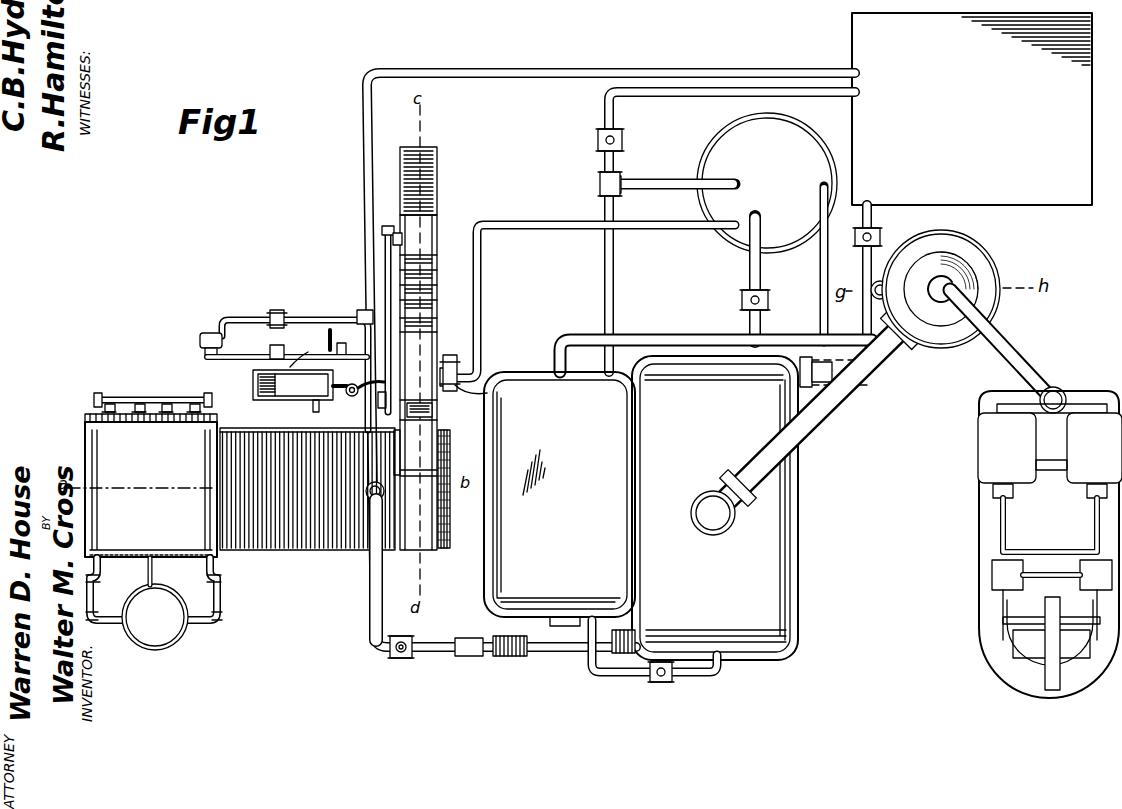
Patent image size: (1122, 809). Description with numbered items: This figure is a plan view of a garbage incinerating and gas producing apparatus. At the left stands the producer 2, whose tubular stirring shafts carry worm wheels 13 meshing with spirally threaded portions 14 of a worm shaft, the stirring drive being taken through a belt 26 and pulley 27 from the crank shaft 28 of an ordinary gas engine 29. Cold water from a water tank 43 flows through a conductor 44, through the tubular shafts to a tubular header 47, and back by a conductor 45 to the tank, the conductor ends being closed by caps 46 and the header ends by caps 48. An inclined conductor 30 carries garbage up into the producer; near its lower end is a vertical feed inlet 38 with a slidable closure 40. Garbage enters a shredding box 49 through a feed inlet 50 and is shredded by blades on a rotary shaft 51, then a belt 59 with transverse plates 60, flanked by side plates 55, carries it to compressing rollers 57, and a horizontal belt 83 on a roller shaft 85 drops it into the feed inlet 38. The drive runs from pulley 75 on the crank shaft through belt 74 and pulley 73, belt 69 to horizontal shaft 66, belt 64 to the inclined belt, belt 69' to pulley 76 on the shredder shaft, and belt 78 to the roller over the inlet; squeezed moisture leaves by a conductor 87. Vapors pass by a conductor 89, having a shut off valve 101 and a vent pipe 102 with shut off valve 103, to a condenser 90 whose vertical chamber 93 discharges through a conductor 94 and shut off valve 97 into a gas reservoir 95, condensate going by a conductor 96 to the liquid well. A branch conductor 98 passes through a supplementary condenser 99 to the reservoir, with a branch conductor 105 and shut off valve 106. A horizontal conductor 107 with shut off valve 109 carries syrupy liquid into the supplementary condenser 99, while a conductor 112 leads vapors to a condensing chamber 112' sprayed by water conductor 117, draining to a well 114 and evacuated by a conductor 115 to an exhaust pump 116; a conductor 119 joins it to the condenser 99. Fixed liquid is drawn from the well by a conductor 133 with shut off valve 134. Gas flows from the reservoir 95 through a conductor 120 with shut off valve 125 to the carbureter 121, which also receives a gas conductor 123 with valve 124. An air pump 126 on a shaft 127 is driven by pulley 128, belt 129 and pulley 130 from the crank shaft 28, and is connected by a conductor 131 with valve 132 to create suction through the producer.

The producer 2 is at (151, 489).
The worm wheels 13 is at (130, 398).
The spirally threaded portions 14 is at (352, 347).
The belt 26 is at (241, 421).
The pulley 27 is at (265, 421).
The crank shaft 28 is at (262, 555).
The gas engine 29 is at (292, 419).
The inclined conductor 30 is at (307, 504).
The feed inlet 38 is at (430, 553).
The slidable closure 40 is at (430, 497).
The water tank 43 is at (155, 617).
The conductor 44 is at (219, 602).
The conductor 45 is at (113, 635).
The caps 46 is at (150, 583).
The tubular header 47 is at (157, 398).
The caps 48 is at (153, 388).
The shredding box 49 is at (438, 237).
The feed inlet 50 is at (443, 153).
The rotary shaft 51 is at (380, 230).
The side plates 55 is at (437, 300).
The compressing rollers 57 is at (432, 410).
The belt 59 is at (437, 284).
The transverse plates 60 is at (437, 268).
The belt 64 is at (458, 372).
The horizontal shaft 66 is at (358, 395).
The belt 69 is at (489, 396).
The belt 69' is at (358, 322).
The pulley 73 is at (447, 357).
The belt 74 is at (314, 398).
The pulley 75 is at (306, 351).
The pulley 76 is at (392, 241).
The belt 78 is at (384, 407).
The horizontal belt 83 is at (437, 458).
The horizontal shaft 85 is at (767, 183).
The conductor 87 is at (482, 300).
The conductor 89 is at (525, 660).
The condenser 90 is at (715, 508).
The vertical chamber 93 is at (490, 628).
The conductor 94 is at (835, 296).
The gas reservoir 95 is at (972, 109).
The conductor 96 is at (810, 264).
The shut off valve 97 is at (882, 237).
The branch conductor 98 is at (716, 232).
The supplementary condenser 99 is at (559, 499).
The shut off valve 101 is at (396, 662).
The vent pipe 102 is at (368, 512).
The shut off valve 103 is at (388, 503).
The branch conductor 105 is at (658, 186).
The shut off valve 106 is at (626, 140).
The horizontal conductor 107 is at (700, 684).
The shut off valve 109 is at (652, 689).
The conductor 112 is at (813, 415).
The condensing chamber 112' is at (985, 301).
The well 114 is at (936, 342).
The conductor 115 is at (1019, 360).
The exhaust pump 116 is at (1050, 544).
The conductor 117 is at (918, 264).
The conductor 119 is at (658, 325).
The conductor 120 is at (550, 68).
The carbureter 121 is at (339, 411).
The gas conductor 123 is at (345, 332).
The valve 124 is at (330, 328).
The shut off valve 125 is at (437, 318).
The air pump 126 is at (200, 338).
The shaft 127 is at (205, 347).
The pulley 128 is at (207, 358).
The belt 129 is at (246, 362).
The pulley 130 is at (295, 375).
The conductor 131 is at (230, 318).
The valve 132 is at (277, 308).
The conductor 133 is at (748, 258).
The shut off valve 134 is at (740, 301).